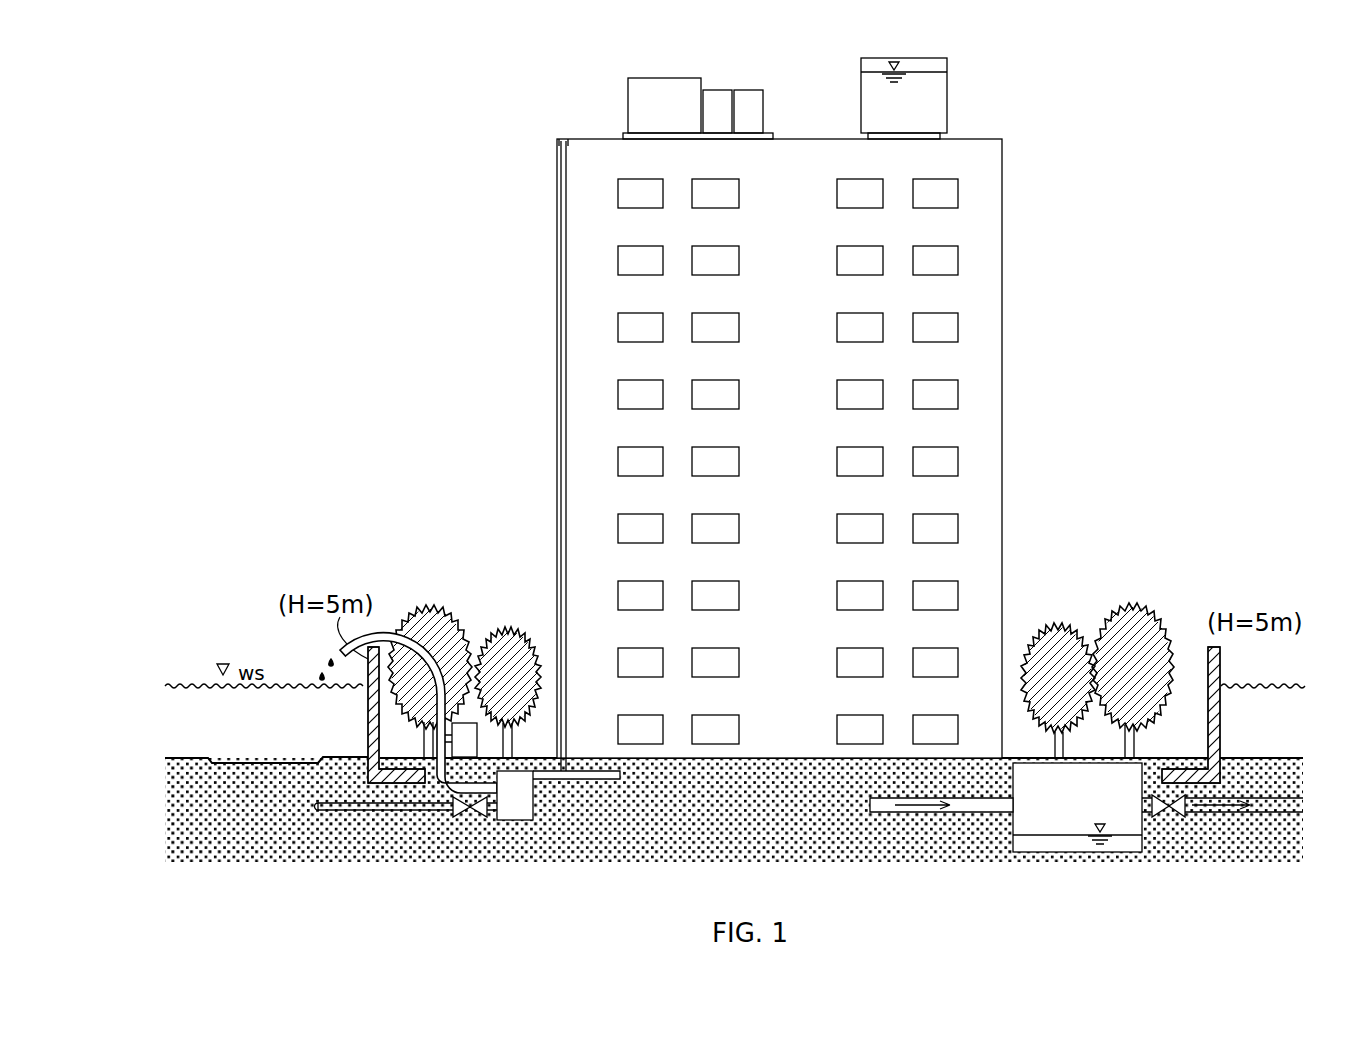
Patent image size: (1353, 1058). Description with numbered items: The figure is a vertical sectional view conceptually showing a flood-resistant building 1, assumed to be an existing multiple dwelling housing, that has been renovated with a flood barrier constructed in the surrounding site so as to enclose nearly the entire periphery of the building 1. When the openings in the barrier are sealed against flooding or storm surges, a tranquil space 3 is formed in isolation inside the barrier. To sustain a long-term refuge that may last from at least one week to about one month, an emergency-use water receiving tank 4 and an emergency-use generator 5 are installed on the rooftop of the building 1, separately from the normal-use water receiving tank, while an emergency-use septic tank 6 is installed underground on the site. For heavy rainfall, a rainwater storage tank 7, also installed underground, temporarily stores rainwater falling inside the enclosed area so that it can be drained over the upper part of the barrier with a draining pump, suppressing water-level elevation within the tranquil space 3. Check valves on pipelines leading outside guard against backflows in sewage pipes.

The building 1 is at (1031, 349).
The tranquil space 3 is at (471, 566).
The emergency-use water receiving tank 4 is at (937, 88).
The emergency-use generator 5 is at (640, 90).
The emergency-use septic tank 6 is at (1065, 822).
The rainwater storage tank 7 is at (515, 808).